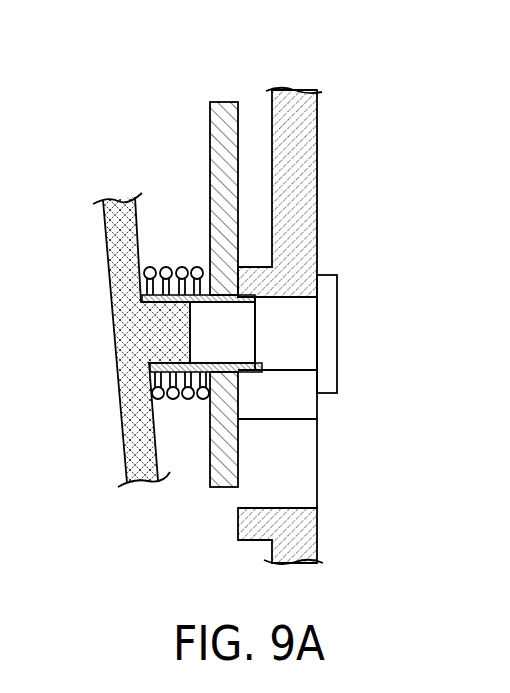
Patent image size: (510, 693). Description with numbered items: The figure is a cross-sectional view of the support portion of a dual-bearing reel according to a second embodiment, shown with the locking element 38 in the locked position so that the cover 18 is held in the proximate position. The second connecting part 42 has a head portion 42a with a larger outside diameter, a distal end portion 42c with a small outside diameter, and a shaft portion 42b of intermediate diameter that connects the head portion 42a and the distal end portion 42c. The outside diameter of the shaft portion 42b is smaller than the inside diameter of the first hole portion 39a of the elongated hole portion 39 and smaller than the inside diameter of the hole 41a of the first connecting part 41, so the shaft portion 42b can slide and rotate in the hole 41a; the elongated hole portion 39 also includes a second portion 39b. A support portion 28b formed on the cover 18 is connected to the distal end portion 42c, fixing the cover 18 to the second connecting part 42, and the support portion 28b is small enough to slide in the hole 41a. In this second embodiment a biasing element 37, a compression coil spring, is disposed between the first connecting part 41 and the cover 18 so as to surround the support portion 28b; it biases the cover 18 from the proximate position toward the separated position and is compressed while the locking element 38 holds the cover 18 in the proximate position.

The cover 18 is at (113, 320).
The biasing element 37 is at (162, 266).
The support portion 28b is at (160, 400).
The first connecting part 41 is at (208, 137).
The hole 41a is at (228, 300).
The locking element 38 is at (317, 128).
The elongated hole portion 39 is at (252, 262).
The first hole portion 39a is at (283, 301).
The lower gap portion 39b is at (286, 505).
The second connecting part 42 is at (301, 401).
The head portion 42a is at (327, 364).
The shaft portion 42b is at (290, 350).
The distal end portion 42c is at (225, 337).